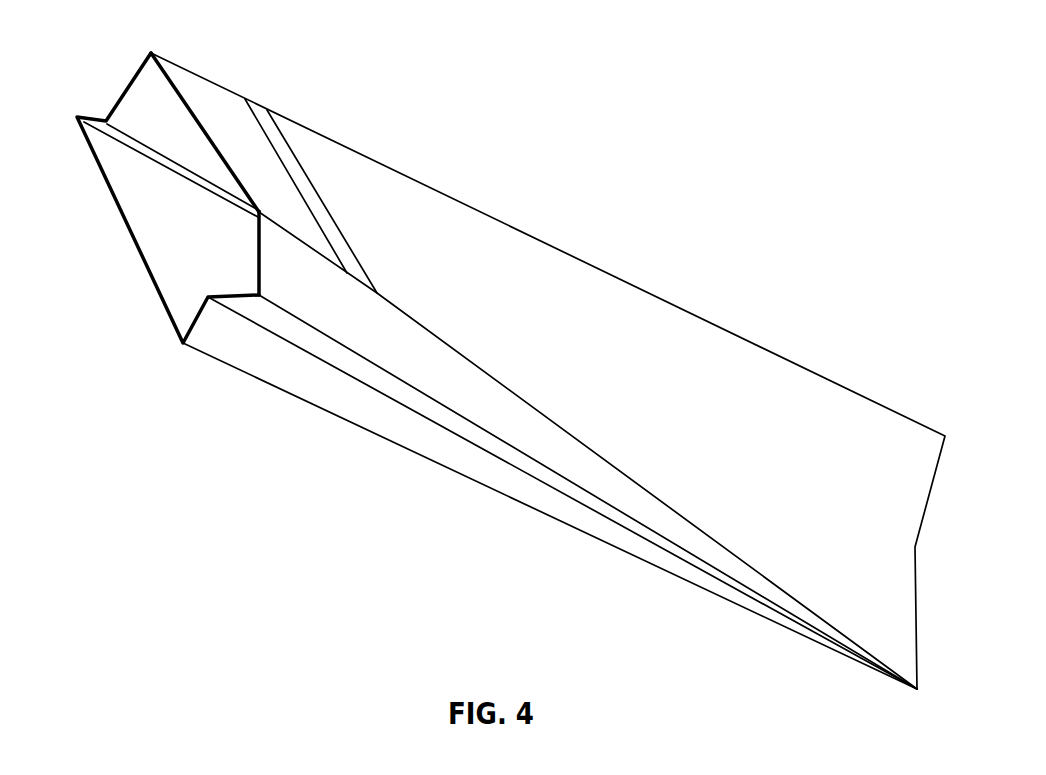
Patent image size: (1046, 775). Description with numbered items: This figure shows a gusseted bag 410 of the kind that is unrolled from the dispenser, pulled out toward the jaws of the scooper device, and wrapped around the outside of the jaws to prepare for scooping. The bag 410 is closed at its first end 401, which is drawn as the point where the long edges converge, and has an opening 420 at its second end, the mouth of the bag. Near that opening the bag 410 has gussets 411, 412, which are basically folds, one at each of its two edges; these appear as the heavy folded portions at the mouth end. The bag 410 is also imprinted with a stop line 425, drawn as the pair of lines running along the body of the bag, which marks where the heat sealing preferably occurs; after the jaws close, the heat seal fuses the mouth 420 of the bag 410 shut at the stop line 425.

The first end 401 is at (915, 648).
The bag 410 is at (892, 437).
The gusset 411 is at (258, 293).
The gusset 412 is at (106, 121).
The opening 420 is at (157, 258).
The stop line 425 is at (297, 157).